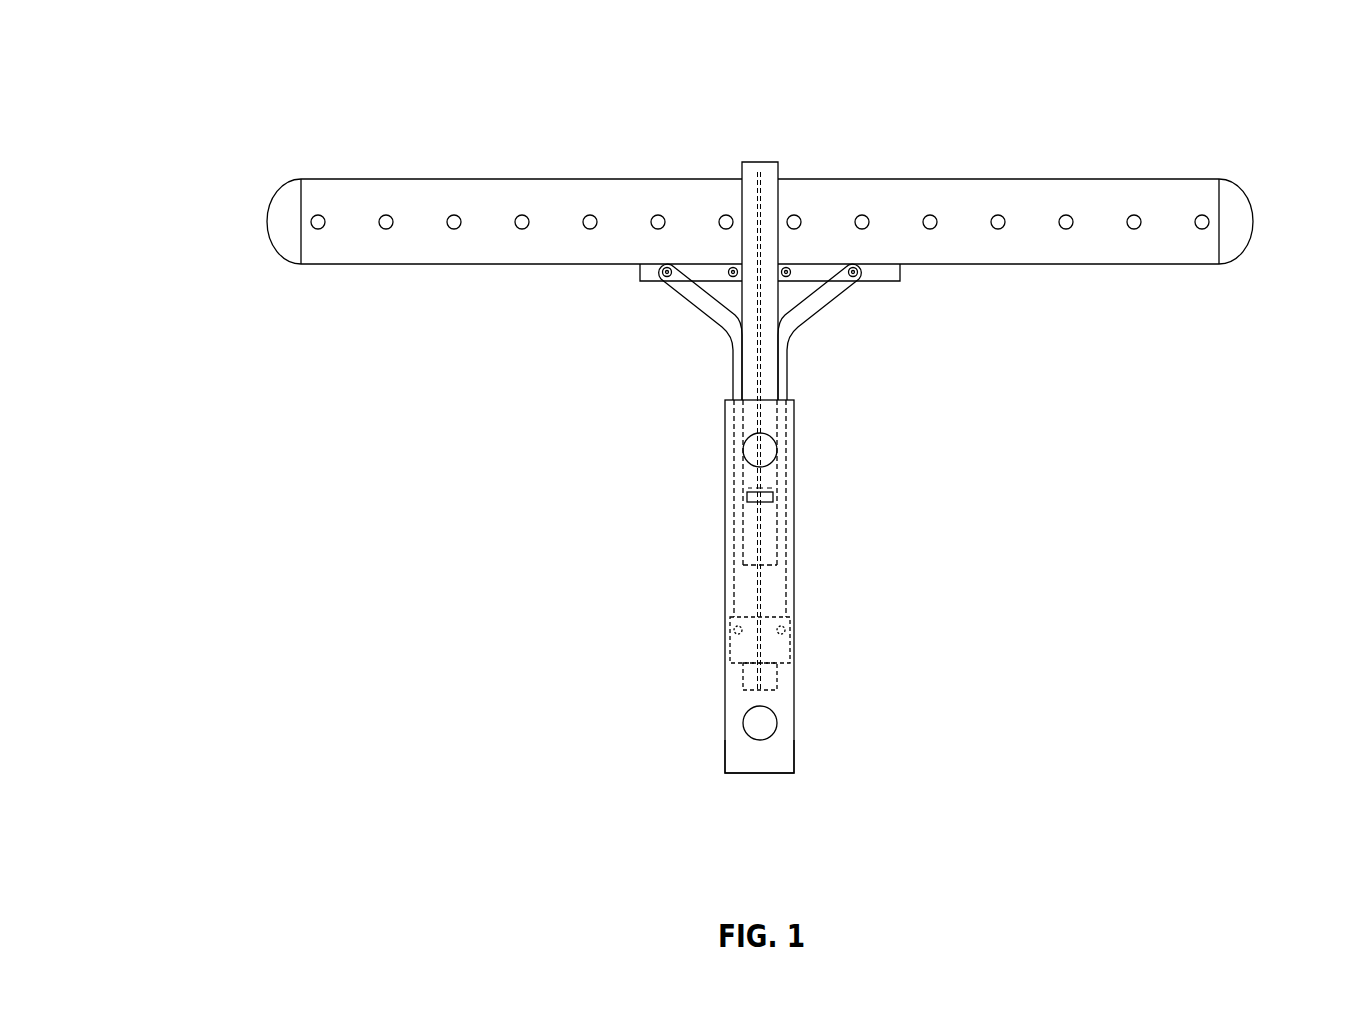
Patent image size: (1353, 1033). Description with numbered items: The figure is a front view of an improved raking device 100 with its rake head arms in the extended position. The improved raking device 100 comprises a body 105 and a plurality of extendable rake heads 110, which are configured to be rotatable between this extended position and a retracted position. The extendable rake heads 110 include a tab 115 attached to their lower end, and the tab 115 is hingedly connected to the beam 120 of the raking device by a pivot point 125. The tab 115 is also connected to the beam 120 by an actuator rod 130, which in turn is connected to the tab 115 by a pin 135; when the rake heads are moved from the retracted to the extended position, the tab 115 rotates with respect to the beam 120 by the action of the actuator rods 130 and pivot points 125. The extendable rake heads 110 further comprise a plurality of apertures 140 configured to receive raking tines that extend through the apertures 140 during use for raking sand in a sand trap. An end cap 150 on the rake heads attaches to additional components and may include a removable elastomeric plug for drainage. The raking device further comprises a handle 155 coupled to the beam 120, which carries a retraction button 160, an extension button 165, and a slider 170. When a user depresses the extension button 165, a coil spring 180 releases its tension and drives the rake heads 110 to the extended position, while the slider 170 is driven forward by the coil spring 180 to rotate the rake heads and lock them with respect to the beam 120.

The improved raking device 100 is at (240, 68).
The body 105 is at (742, 535).
The extendable rake heads 110 is at (672, 192).
The tab 115 is at (640, 268).
The beam 120 is at (775, 185).
The pivot point 125 is at (731, 266).
The actuator rod 130 is at (716, 313).
The pin 135 is at (667, 278).
The apertures 140 is at (588, 214).
The end cap 150 is at (283, 228).
The handle 155 is at (785, 755).
The retraction button 160 is at (748, 450).
The extension button 165 is at (745, 723).
The slider 170 is at (748, 497).
The coil spring 180 is at (770, 684).